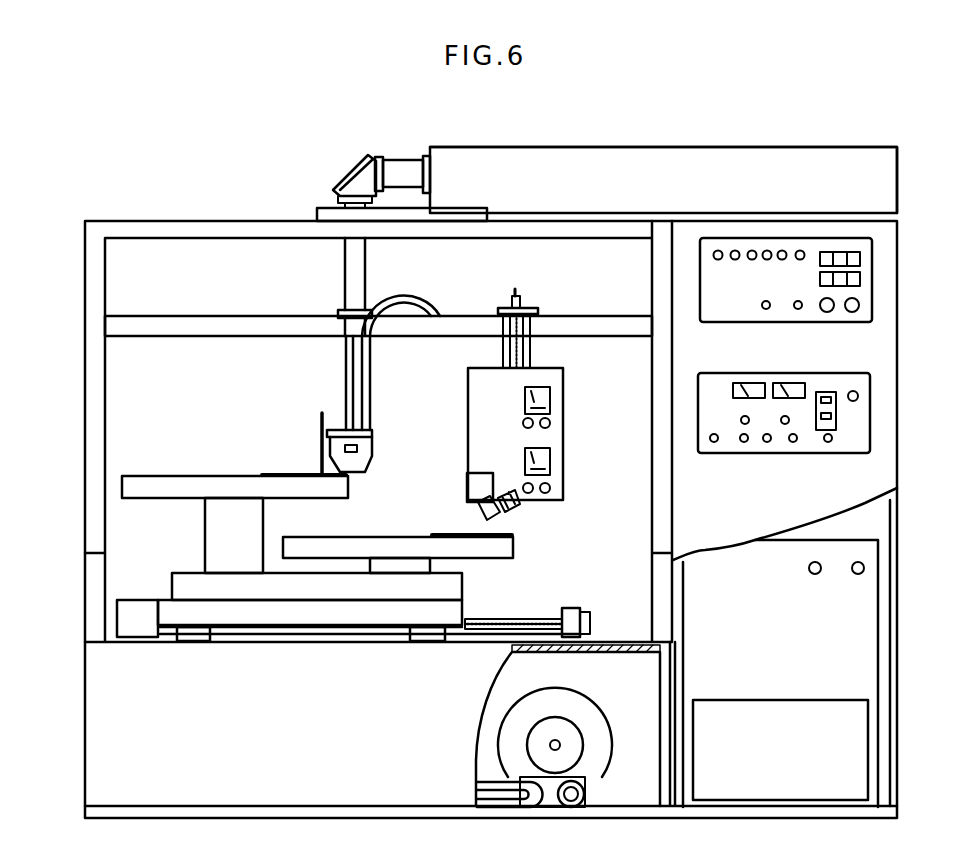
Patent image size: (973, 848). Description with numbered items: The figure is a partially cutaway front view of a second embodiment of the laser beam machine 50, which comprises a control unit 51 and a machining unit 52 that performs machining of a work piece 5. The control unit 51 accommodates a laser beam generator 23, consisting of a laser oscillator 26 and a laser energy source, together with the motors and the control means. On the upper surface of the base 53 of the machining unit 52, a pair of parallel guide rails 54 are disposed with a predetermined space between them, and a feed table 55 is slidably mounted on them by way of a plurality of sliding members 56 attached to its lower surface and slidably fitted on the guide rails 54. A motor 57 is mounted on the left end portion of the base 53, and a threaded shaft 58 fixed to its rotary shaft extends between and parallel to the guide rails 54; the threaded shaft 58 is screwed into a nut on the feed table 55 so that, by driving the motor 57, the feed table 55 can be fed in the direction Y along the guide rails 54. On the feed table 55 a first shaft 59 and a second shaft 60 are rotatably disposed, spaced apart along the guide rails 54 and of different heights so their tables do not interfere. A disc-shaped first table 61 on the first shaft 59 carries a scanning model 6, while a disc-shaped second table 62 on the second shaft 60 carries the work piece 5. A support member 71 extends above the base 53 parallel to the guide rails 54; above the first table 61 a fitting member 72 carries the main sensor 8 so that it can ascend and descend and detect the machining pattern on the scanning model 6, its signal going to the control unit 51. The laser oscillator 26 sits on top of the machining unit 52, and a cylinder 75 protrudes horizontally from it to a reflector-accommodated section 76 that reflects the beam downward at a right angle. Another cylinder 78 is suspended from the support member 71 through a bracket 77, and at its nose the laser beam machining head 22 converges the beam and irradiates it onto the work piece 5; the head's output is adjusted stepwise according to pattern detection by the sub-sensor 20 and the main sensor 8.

The laser beam machine 50 is at (268, 198).
The machining unit 52 is at (168, 220).
The base 53 is at (100, 712).
The control unit 51 is at (898, 422).
The laser oscillator 26 is at (606, 168).
The laser beam generator 23 is at (746, 148).
The reflector-accommodated section 76 is at (363, 176).
The cylinder 75 is at (404, 171).
The support member 71 is at (215, 330).
The cylinder 78 is at (354, 283).
The bracket 77 is at (368, 303).
The laser beam machining head 22 is at (363, 447).
The work piece 5 is at (292, 472).
The second table 62 is at (162, 482).
The second shaft 60 is at (208, 513).
The fitting member 72 is at (528, 333).
The main sensor 8 is at (557, 450).
The sub-sensor 20 is at (476, 487).
The scanning model 6 is at (460, 533).
The first table 61 is at (508, 553).
The first shaft 59 is at (395, 567).
The feed table 55 is at (373, 623).
The guide rails 54 is at (322, 645).
The sliding members 56 is at (191, 638).
The motor 57 is at (132, 630).
The threaded shaft 58 is at (487, 631).